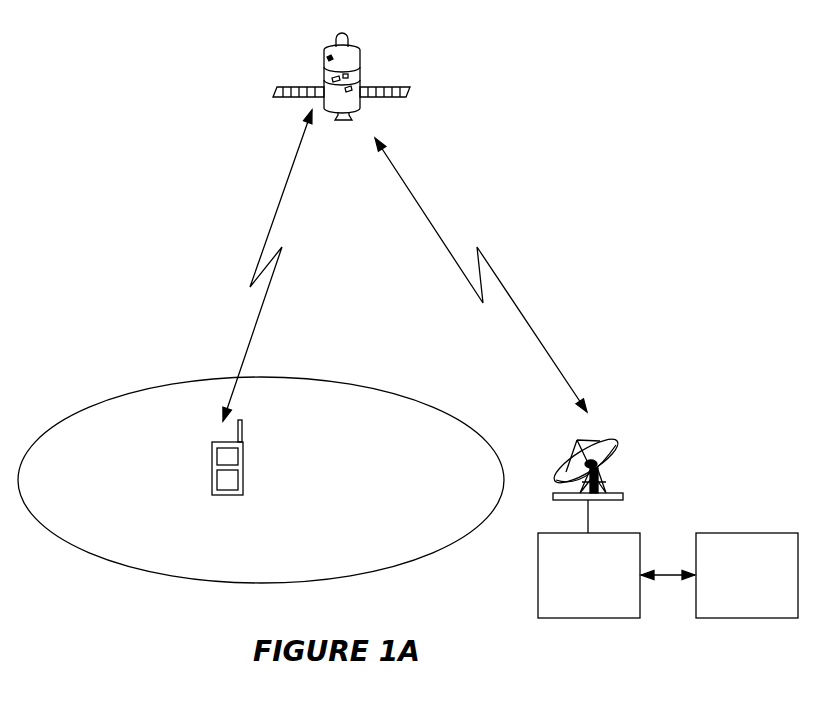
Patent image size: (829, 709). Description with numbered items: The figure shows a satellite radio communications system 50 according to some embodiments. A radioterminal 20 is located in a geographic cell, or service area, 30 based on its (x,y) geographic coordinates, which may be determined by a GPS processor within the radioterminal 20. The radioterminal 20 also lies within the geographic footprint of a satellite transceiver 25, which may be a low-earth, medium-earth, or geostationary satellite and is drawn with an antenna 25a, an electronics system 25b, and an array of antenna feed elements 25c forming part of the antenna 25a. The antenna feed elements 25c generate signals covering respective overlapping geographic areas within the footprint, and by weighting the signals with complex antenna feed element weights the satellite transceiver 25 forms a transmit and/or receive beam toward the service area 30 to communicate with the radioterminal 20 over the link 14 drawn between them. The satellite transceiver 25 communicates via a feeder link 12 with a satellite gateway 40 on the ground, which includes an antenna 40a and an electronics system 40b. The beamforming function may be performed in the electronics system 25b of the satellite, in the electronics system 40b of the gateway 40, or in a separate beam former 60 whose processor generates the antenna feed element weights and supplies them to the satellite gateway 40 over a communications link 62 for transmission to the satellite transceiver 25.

The feeder link 12 is at (437, 230).
The communication link between satellite and mobile device 14 is at (267, 235).
The radioterminal 20 is at (212, 462).
The satellite transceiver 25 is at (386, 32).
The antenna 25a is at (381, 88).
The electronics system 25b is at (325, 58).
The antenna feed elements 25c is at (287, 96).
The geographic cell 30 is at (322, 558).
The satellite gateway 40 is at (667, 486).
The antenna 40a is at (607, 447).
The electronics system 40b is at (604, 586).
The system 50 is at (557, 212).
The beam former 60 is at (759, 586).
The communications link 62 is at (672, 578).